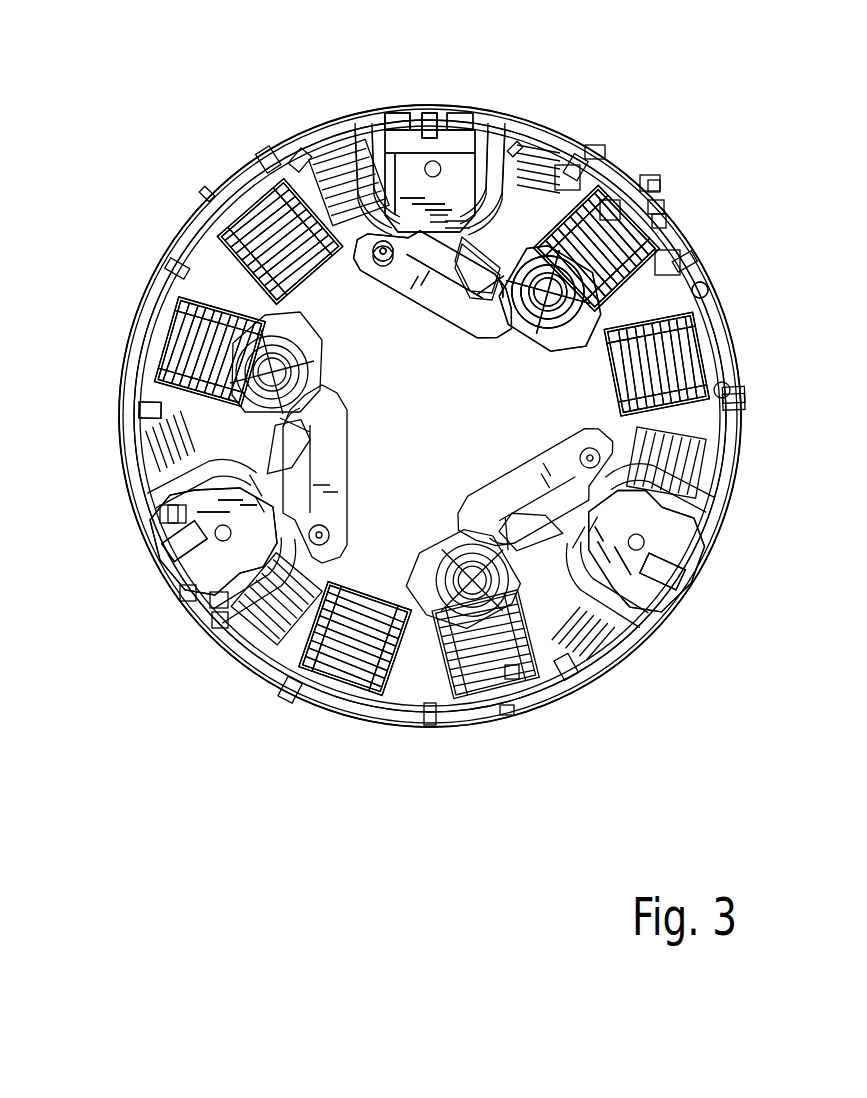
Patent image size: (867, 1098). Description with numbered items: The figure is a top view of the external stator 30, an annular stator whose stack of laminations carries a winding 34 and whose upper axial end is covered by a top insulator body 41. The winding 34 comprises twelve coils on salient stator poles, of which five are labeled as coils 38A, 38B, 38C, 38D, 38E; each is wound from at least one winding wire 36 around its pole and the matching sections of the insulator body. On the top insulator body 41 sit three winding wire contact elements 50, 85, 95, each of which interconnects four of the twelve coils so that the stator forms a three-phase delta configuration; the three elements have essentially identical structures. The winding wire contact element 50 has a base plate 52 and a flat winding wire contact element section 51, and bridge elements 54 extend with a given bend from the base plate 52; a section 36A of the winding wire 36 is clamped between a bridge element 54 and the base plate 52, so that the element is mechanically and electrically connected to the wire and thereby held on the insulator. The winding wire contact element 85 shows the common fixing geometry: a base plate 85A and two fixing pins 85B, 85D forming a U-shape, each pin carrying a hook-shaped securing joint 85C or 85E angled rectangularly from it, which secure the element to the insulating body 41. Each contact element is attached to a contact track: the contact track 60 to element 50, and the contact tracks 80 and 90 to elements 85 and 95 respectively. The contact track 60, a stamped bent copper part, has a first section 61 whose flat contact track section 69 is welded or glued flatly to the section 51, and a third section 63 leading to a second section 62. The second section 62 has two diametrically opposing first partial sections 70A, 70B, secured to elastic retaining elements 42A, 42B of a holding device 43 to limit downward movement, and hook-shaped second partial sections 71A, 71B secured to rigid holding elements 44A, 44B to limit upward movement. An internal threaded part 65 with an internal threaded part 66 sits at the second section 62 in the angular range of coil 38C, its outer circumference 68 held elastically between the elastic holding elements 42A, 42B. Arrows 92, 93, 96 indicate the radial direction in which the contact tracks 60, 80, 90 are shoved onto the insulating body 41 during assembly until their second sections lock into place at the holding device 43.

The external stator 30 is at (137, 75).
The winding 34 is at (700, 362).
The winding wire 36 is at (287, 187).
The section of winding wire 36A is at (302, 160).
The coil 38A is at (260, 187).
The coil 38B is at (515, 190).
The coil 38C is at (660, 222).
The coil 38D is at (717, 412).
The coil 38E is at (513, 673).
The top insulator body 41 is at (222, 630).
The elastic retaining element 42A is at (610, 210).
The elastic retaining element 42B is at (653, 218).
The holding device 43 is at (607, 197).
The rigid holding element 44A is at (567, 175).
The rigid holding element 44B is at (667, 263).
The winding wire contact element 50 is at (452, 165).
The flat winding wire contact element section 51 is at (400, 190).
The base plate 52 is at (422, 168).
The bridge element 54 is at (355, 195).
The contact track 60 is at (500, 345).
The first section of contact track 61 is at (407, 247).
The second section of contact track 62 is at (707, 273).
The third section of contact track 63 is at (420, 290).
The internal threaded part 65 is at (652, 183).
The internal threaded part 66 is at (657, 207).
The outer circumference 68 is at (530, 350).
The flat contact track section 69 is at (362, 280).
The first partial section 70A is at (598, 150).
The first partial section 70B is at (565, 350).
The second partial section 71A is at (477, 295).
The second partial section 71B is at (673, 340).
The contact track 80 is at (185, 340).
The winding wire contact element 85 is at (187, 535).
The base plate 85A is at (220, 620).
The fixing pin 85B is at (167, 518).
The securing joint 85C is at (175, 513).
The fixing pin 85D is at (220, 600).
The securing joint 85E is at (187, 593).
The contact track 90 is at (417, 687).
The arrow 92 is at (703, 138).
The arrow 93 is at (100, 305).
The winding wire contact element 95 is at (667, 583).
The arrow 96 is at (507, 743).